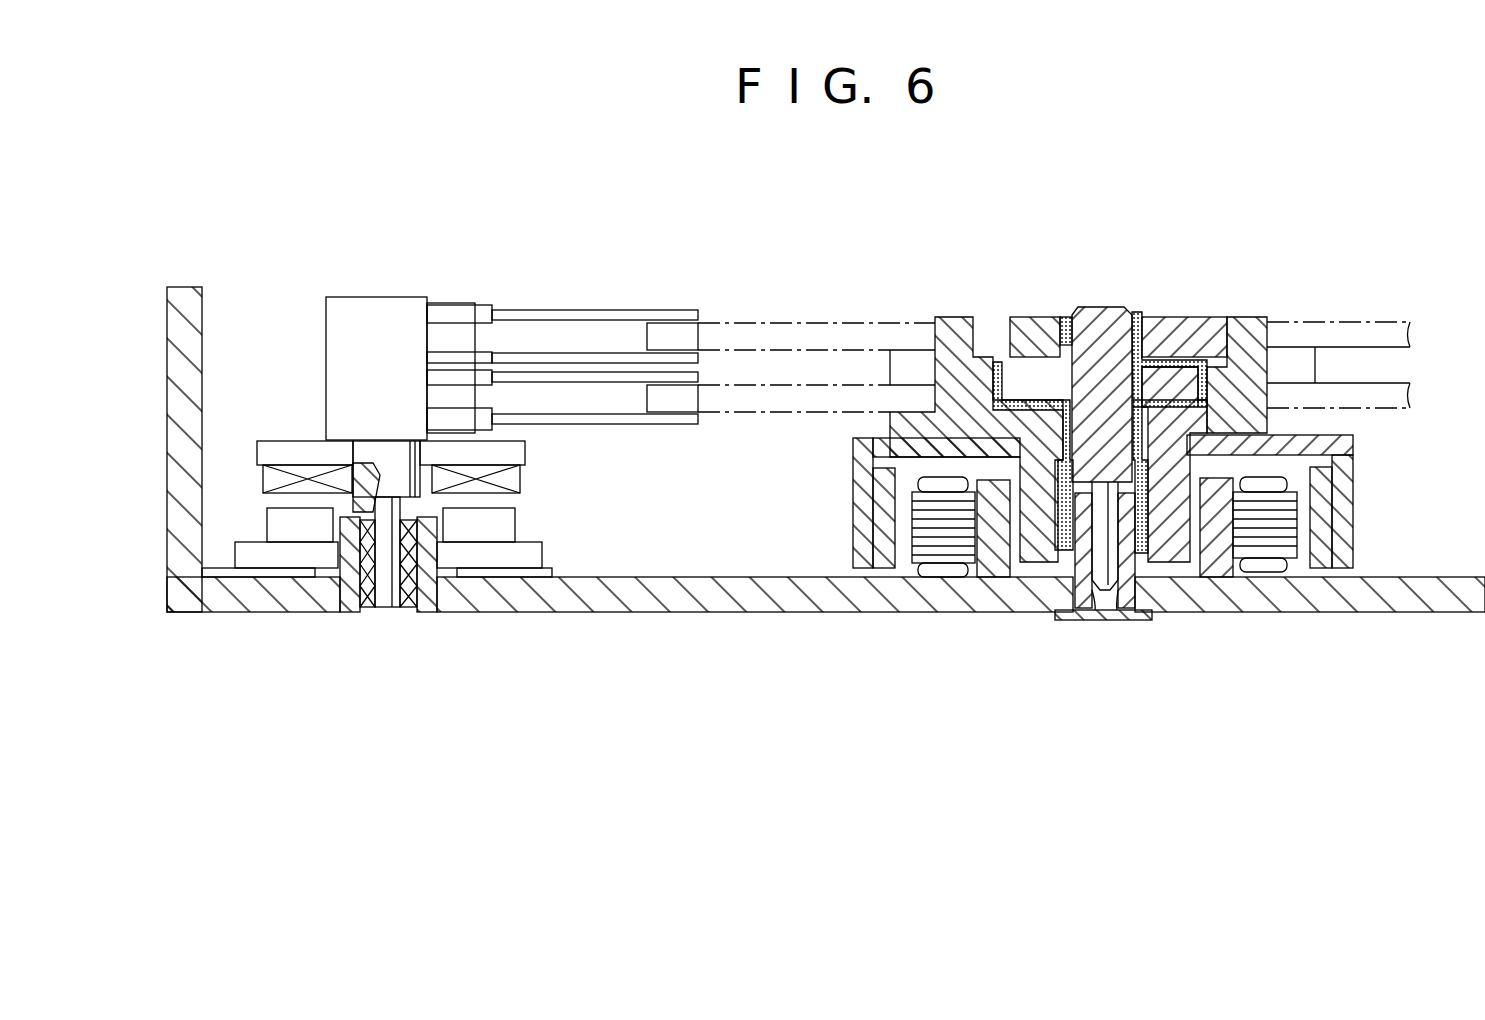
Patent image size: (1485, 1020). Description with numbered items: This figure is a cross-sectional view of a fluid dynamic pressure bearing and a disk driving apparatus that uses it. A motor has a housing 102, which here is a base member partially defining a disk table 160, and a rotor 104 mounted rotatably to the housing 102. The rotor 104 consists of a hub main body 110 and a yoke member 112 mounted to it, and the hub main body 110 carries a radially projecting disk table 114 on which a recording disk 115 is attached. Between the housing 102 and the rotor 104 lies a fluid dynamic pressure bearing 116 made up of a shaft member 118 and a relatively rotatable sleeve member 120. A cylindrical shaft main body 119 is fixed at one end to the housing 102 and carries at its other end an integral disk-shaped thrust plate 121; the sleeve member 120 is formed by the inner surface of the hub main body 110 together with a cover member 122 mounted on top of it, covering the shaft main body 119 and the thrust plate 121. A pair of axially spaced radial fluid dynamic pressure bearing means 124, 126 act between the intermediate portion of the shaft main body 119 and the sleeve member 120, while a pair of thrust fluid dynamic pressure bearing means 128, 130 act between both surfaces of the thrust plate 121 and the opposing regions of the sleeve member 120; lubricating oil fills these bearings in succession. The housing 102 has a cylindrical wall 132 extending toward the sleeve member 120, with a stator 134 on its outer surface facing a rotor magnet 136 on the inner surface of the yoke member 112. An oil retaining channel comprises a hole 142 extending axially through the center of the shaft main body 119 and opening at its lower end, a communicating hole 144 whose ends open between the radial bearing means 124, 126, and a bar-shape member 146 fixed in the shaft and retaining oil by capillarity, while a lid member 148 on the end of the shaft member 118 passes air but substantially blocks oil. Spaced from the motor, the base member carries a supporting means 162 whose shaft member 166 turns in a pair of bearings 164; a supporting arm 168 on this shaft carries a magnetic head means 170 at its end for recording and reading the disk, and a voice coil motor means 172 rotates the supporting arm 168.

The housing 102 is at (1318, 598).
The rotor 104 is at (1252, 309).
The hub main body 110 is at (935, 368).
The yoke member 112 is at (1340, 515).
The disk table 114 is at (1320, 448).
The recording disk 115 is at (1363, 323).
The fluid dynamic pressure bearing 116 is at (1173, 311).
The shaft member 118 is at (1085, 308).
The shaft main body 119 is at (1095, 310).
The sleeve member 120 is at (1197, 499).
The thrust plate 121 is at (1015, 352).
The cover member 122 is at (1197, 323).
The radial fluid dynamic pressure bearing means 124 is at (1057, 527).
The radial fluid dynamic pressure bearing means 126 is at (1055, 432).
The thrust fluid dynamic pressure bearing means 128 is at (1297, 430).
The thrust fluid dynamic pressure bearing means 130 is at (1205, 340).
The cylindrical wall 132 is at (993, 522).
The stator 134 is at (1360, 607).
The rotor magnet 136 is at (1325, 553).
The hole 142 is at (1098, 588).
The communicating hole 144 is at (1150, 507).
The bar-shape member 146 is at (1112, 622).
The lid member 148 is at (1125, 590).
The disk table 160 is at (702, 521).
The supporting means 162 is at (303, 413).
The bearings 164 is at (350, 520).
The shaft member 166 is at (387, 597).
The supporting arm 168 is at (570, 358).
The magnetic head means 170 is at (697, 352).
The voice coil motor means 172 is at (532, 499).